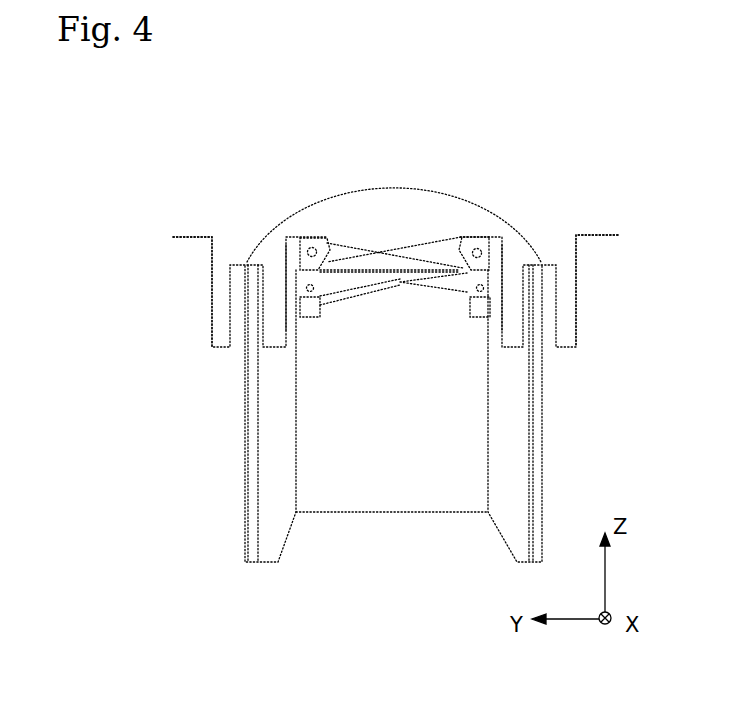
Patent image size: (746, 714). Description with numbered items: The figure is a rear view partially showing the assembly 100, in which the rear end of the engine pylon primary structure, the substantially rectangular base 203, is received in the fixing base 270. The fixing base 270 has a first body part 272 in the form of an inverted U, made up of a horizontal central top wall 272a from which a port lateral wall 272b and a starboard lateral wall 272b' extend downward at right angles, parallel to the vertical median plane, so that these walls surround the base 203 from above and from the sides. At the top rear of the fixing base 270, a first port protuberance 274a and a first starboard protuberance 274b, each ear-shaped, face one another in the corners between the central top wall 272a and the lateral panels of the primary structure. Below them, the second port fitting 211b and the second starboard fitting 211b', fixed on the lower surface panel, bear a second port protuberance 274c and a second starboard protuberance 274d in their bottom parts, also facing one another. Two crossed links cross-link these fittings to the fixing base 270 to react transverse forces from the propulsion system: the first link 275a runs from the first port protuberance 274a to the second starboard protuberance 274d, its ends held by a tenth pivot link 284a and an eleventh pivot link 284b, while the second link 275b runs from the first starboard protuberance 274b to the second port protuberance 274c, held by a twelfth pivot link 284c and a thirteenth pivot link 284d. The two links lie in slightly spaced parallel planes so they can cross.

The assembly 100 is at (378, 552).
The base 203 is at (392, 461).
The second port fitting 211b is at (172, 244).
The second starboard fitting 211b' is at (627, 238).
The fixing base 270 is at (420, 178).
The first body part 272 is at (550, 429).
The central top wall 272a is at (402, 270).
The port lateral wall 272b is at (182, 413).
The starboard lateral wall 272b' is at (613, 413).
The first port protuberance 274a is at (308, 305).
The first starboard protuberance 274b is at (487, 308).
The second port protuberance 274c is at (292, 238).
The second starboard protuberance 274d is at (497, 235).
The first link 275a is at (432, 265).
The second link 275b is at (348, 253).
The tenth pivot link 284a is at (310, 288).
The eleventh pivot link 284b is at (482, 253).
The twelfth pivot link 284c is at (478, 290).
The thirteenth pivot link 284d is at (313, 252).